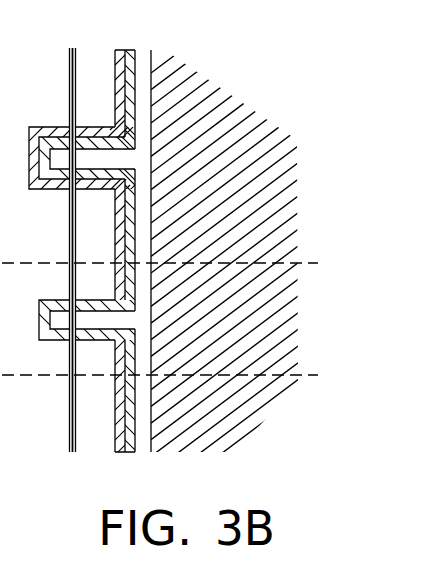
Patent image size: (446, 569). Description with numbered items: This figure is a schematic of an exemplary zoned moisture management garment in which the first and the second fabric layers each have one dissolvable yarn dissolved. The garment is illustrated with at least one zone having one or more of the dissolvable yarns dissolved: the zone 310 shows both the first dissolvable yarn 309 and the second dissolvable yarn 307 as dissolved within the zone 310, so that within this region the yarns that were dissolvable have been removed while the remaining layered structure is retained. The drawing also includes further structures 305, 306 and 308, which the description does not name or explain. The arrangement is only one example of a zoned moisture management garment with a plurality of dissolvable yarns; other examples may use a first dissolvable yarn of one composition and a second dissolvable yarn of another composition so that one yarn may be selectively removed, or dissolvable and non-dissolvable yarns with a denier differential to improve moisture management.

The substrate body 305 is at (242, 207).
The inner wall layer 306 is at (144, 59).
The second dissolvable yarn 307 is at (113, 60).
The conductor wire 308 is at (77, 441).
The first dissolvable yarn 309 is at (69, 421).
The zone 310 is at (330, 263).